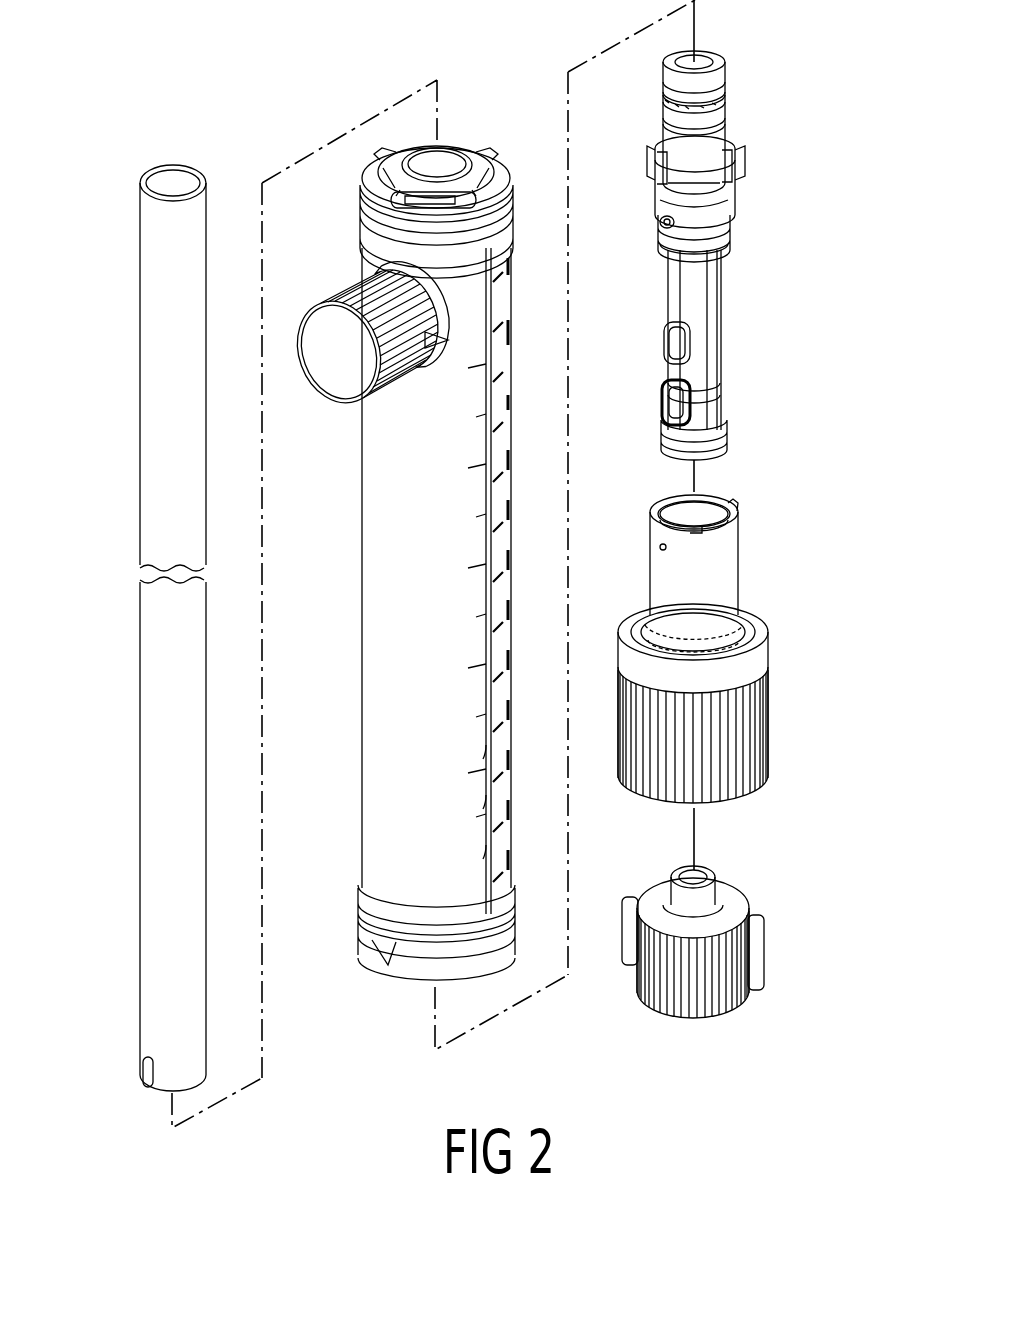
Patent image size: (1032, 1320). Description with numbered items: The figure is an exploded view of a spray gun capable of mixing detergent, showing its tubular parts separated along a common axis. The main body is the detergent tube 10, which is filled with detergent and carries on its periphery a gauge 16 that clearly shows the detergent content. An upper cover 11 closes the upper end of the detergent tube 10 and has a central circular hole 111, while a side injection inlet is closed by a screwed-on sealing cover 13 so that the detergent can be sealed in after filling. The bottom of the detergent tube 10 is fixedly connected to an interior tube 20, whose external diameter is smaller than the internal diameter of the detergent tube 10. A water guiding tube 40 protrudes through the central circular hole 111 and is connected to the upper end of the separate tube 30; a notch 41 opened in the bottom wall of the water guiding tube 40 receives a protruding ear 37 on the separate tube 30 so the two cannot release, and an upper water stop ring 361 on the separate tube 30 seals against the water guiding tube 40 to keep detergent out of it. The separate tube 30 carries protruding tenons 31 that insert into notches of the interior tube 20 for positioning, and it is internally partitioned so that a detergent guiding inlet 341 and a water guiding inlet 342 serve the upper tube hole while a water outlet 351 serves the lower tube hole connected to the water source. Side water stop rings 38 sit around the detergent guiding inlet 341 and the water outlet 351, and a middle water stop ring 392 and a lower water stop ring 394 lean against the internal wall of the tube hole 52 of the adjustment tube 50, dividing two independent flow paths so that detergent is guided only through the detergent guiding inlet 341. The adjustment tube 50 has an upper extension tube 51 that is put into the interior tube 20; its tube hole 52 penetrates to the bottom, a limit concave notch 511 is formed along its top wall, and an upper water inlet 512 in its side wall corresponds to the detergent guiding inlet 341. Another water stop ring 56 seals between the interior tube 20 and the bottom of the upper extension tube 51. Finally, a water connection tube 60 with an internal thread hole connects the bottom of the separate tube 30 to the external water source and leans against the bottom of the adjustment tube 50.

The detergent tube 10 is at (410, 747).
The upper cover 11 is at (378, 172).
The central circular hole 111 is at (437, 168).
The sealing cover 13 is at (330, 375).
The gauge 16 is at (480, 818).
The interior tube 20 is at (400, 966).
The separate tube 30 is at (727, 88).
The protruding tenons 31 is at (733, 208).
The protruding ear 37 is at (660, 166).
The side water stop rings 38 is at (700, 242).
The detergent guiding inlet 341 is at (663, 222).
The water guiding inlet 342 is at (668, 340).
The water outlet 351 is at (668, 404).
The upper water stop ring 361 is at (668, 98).
The middle water stop ring 392 is at (730, 242).
The lower water stop ring 394 is at (730, 434).
The water guiding tube 40 is at (165, 462).
The notch 41 is at (143, 1066).
The adjustment tube 50 is at (730, 730).
The upper extension tube 51 is at (710, 590).
The limit concave notch 511 is at (736, 516).
The upper water inlet 512 is at (667, 547).
The tube hole 52 is at (682, 513).
The water stop ring 56 is at (725, 643).
The water connection tube 60 is at (755, 945).